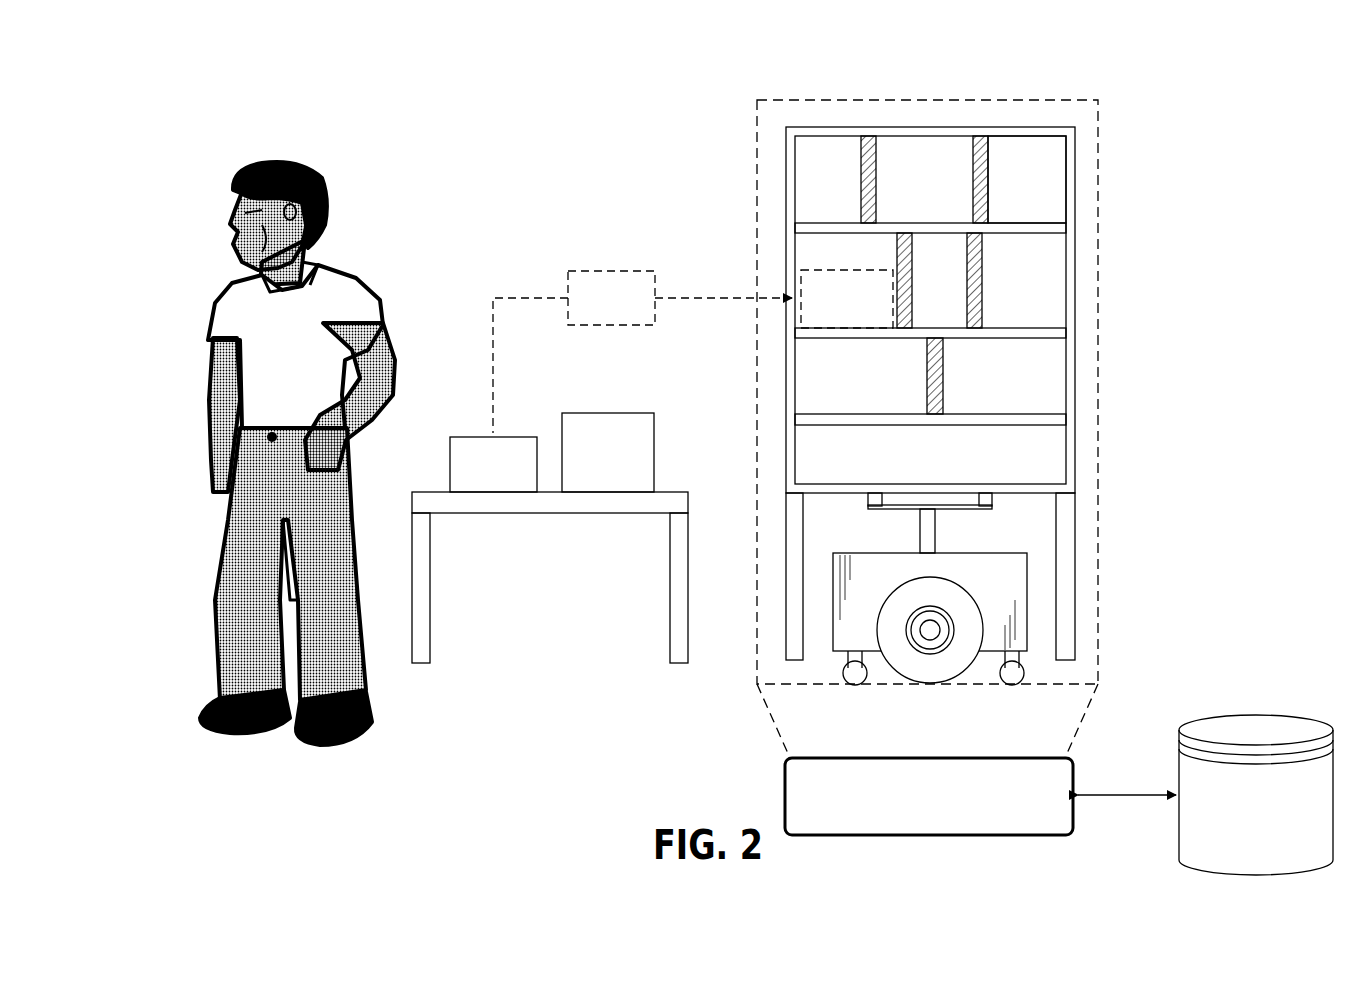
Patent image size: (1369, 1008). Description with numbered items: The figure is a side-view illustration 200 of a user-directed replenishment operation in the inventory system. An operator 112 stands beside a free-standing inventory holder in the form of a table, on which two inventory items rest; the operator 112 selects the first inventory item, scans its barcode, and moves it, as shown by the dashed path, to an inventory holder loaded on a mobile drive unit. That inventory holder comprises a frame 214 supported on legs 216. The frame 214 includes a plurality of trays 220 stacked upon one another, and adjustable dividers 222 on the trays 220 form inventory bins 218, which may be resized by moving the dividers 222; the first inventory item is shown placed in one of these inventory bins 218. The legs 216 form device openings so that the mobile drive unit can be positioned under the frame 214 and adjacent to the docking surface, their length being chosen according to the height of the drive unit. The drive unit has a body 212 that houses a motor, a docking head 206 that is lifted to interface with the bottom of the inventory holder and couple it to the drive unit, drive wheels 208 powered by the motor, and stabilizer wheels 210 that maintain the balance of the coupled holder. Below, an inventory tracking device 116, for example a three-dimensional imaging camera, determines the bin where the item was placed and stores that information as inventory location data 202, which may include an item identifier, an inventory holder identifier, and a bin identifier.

The side-view illustration 200 is at (252, 98).
The operator 112 is at (300, 157).
The frame 214 is at (1082, 226).
The trays 220 is at (1038, 330).
The adjustable dividers 222 is at (876, 178).
The inventory bins 218 is at (1040, 178).
The legs 216 is at (1083, 536).
The docking head 206 is at (870, 508).
The body 212 is at (989, 553).
The drive wheels 208 is at (930, 683).
The stabilizer wheels 210 is at (860, 672).
The inventory tracking device 116 is at (966, 759).
The inventory location data 202 is at (1256, 795).